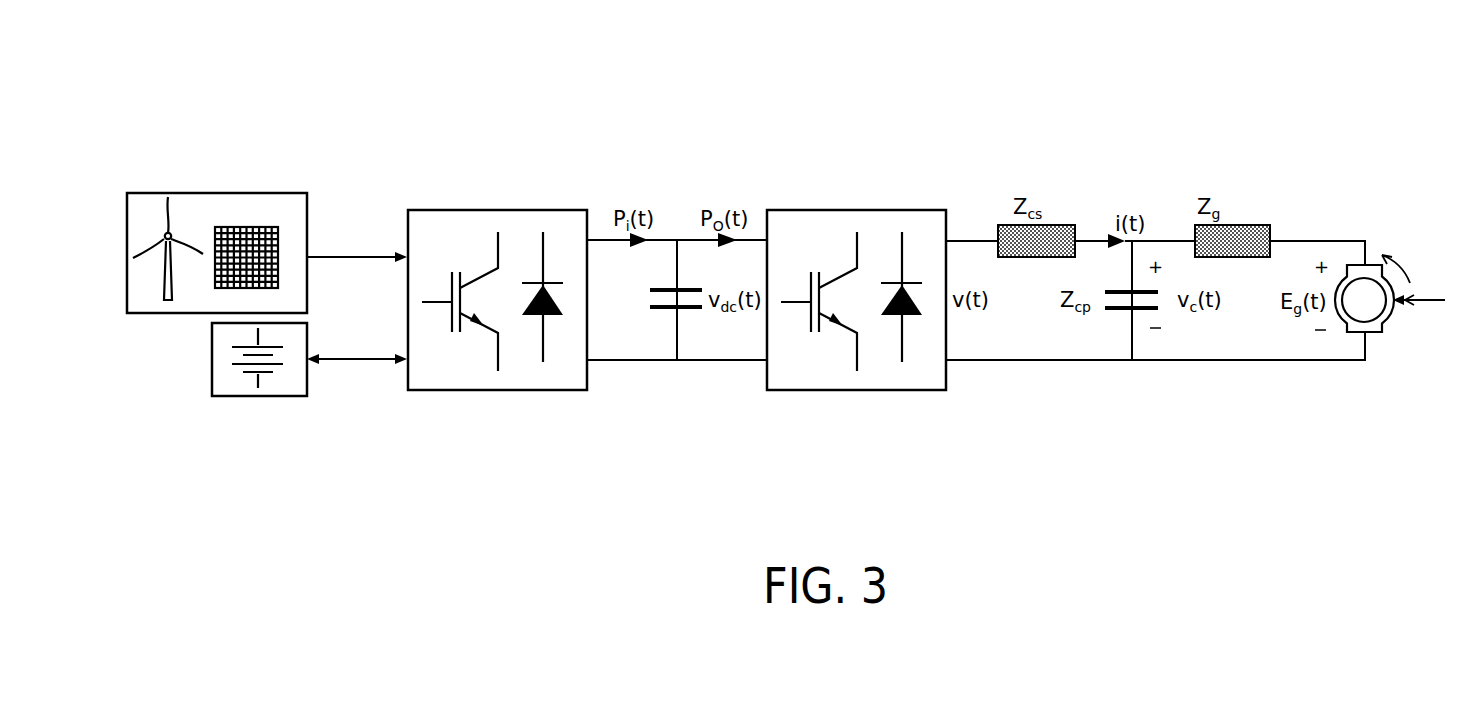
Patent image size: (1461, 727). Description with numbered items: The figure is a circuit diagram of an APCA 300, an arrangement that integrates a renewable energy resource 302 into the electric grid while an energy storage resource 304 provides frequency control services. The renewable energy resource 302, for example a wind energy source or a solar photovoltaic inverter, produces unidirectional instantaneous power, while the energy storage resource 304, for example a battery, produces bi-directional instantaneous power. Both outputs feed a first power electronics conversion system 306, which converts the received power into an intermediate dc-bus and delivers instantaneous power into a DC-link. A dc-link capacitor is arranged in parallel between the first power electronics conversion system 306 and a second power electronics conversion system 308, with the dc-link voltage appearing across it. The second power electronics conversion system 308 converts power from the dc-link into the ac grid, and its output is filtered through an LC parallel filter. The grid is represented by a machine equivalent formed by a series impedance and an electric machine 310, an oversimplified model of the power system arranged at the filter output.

The APCA 300 is at (1367, 53).
The renewable energy resource 302 is at (210, 192).
The energy storage resource 304 is at (260, 397).
The first power electronics conversion system 306 is at (472, 208).
The second power electronics conversion system 308 is at (813, 208).
The electric machine 310 is at (1373, 332).